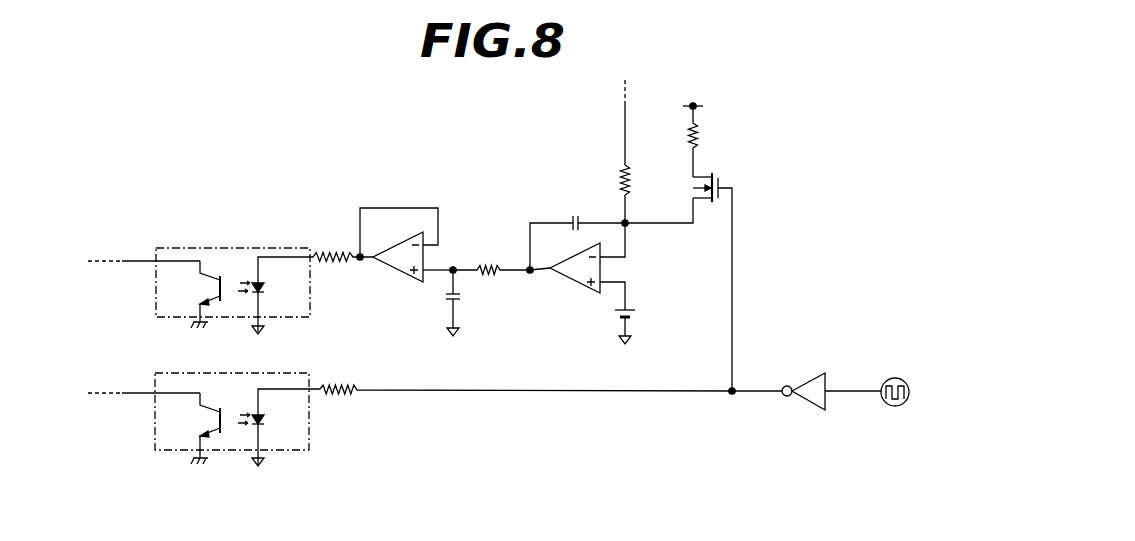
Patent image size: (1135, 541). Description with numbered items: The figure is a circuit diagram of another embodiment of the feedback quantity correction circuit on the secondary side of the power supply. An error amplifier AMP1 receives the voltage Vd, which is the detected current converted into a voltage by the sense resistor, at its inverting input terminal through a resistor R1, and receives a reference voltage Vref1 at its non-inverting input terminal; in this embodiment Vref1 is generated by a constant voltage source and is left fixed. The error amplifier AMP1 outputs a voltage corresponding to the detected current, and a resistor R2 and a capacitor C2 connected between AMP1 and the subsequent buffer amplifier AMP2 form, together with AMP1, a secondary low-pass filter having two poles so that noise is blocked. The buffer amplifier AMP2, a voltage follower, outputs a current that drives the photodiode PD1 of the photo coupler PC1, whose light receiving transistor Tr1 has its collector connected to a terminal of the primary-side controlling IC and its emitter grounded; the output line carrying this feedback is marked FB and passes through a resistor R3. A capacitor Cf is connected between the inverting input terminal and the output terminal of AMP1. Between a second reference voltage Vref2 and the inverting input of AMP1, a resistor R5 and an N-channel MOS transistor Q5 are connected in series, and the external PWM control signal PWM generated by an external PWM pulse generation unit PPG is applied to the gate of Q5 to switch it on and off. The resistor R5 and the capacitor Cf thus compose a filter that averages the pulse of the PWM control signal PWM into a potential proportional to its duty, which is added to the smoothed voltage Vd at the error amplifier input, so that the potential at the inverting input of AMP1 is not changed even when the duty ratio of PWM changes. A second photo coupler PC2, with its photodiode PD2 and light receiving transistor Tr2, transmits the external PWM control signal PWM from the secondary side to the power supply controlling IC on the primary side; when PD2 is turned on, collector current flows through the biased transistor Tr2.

The photo coupler PC1 is at (235, 248).
The light receiving transistor Tr1 is at (190, 294).
The photodiode PD1 is at (274, 295).
The feedback signal node FB is at (339, 243).
The resistor R3 is at (341, 274).
The buffer amplifier AMP2 is at (393, 278).
The capacitor C2 is at (471, 301).
The resistor R2 is at (491, 256).
The error amplifier AMP1 is at (568, 280).
The reference voltage Vref1 is at (652, 314).
The capacitor Cf is at (579, 227).
The resistor R1 is at (647, 163).
The voltage Vd is at (602, 111).
The reference voltage Vref2 is at (719, 98).
The resistor R5 is at (715, 141).
The N-channel MOS transistor Q5 is at (690, 274).
The PWM control signal PWM is at (805, 383).
The PWM pulse generation unit PPG is at (887, 407).
The photo coupler PC2 is at (240, 452).
The light receiving transistor Tr2 is at (190, 428).
The photodiode PD2 is at (279, 427).